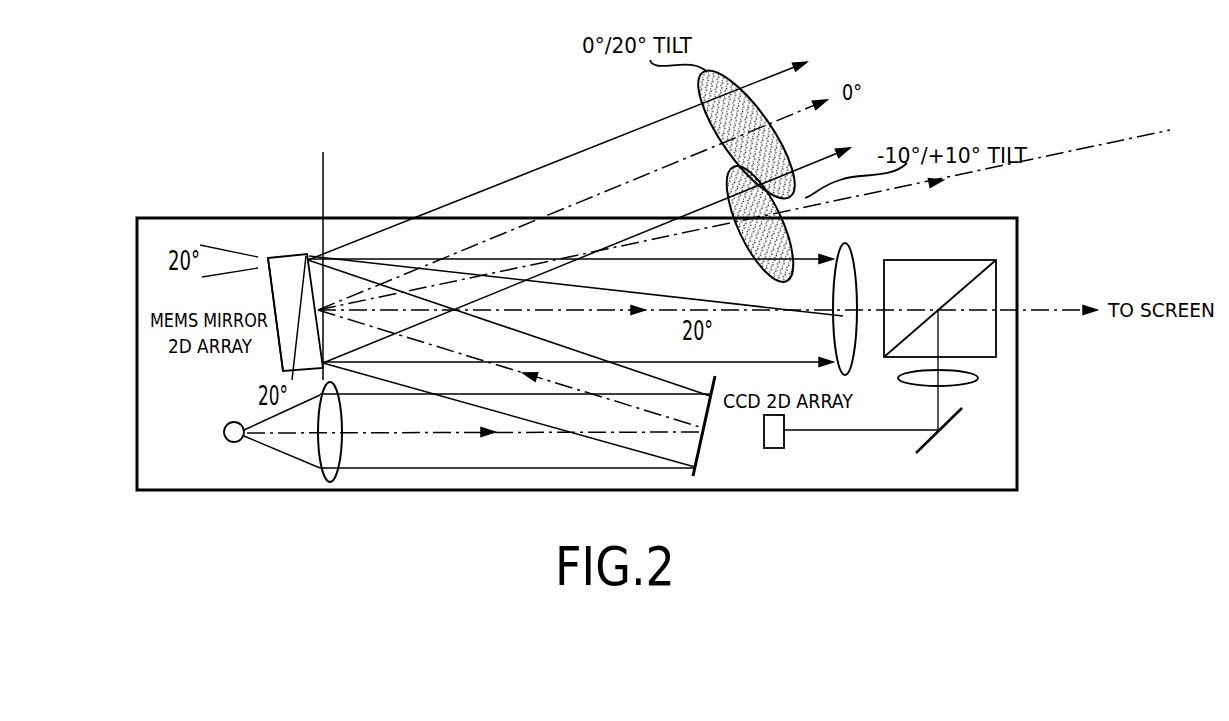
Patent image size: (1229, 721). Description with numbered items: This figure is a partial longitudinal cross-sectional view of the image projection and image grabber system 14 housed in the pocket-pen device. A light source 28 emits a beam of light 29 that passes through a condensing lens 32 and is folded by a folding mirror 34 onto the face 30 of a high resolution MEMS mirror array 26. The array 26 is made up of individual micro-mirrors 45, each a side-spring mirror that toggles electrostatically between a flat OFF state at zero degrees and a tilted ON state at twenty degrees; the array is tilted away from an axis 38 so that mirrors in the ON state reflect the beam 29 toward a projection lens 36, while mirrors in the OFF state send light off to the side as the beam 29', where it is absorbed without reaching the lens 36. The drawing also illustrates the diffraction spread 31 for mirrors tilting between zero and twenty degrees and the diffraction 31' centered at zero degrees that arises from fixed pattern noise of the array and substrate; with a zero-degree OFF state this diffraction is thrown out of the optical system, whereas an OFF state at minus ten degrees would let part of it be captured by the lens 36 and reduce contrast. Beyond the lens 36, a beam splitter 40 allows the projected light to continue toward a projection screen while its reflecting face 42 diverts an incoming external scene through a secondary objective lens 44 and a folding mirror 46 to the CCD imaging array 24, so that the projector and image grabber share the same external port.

The image projection and image grabber system 14 is at (408, 491).
The CCD imaging array 24 is at (773, 449).
The MEMS mirror array 26 is at (288, 254).
The light source 28 is at (240, 443).
The beam of light 29 is at (707, 321).
The side-directed light beam 29' is at (557, 161).
The face of the array 30 is at (313, 293).
The projection lens (0°/20° tilt position) 31 is at (746, 106).
The diffraction 31' is at (840, 224).
The condensing lens 32 is at (340, 412).
The folding mirror 34 is at (699, 452).
The projection lens 36 is at (852, 270).
The axis 38 is at (322, 175).
The beam splitter 40 is at (957, 267).
The reflecting face 42 is at (967, 285).
The secondary objective lens 44 is at (978, 378).
The micro-mirror 45 is at (287, 352).
The folding mirror 46 is at (920, 445).